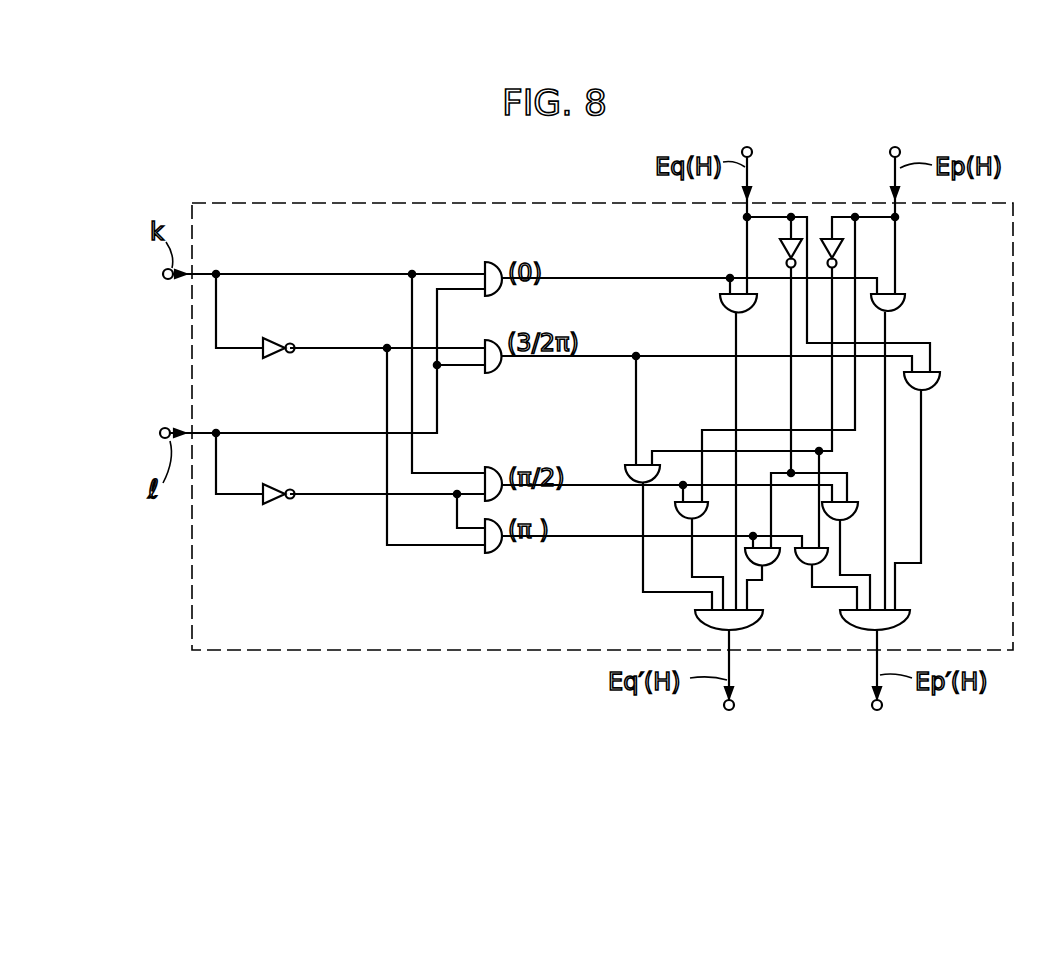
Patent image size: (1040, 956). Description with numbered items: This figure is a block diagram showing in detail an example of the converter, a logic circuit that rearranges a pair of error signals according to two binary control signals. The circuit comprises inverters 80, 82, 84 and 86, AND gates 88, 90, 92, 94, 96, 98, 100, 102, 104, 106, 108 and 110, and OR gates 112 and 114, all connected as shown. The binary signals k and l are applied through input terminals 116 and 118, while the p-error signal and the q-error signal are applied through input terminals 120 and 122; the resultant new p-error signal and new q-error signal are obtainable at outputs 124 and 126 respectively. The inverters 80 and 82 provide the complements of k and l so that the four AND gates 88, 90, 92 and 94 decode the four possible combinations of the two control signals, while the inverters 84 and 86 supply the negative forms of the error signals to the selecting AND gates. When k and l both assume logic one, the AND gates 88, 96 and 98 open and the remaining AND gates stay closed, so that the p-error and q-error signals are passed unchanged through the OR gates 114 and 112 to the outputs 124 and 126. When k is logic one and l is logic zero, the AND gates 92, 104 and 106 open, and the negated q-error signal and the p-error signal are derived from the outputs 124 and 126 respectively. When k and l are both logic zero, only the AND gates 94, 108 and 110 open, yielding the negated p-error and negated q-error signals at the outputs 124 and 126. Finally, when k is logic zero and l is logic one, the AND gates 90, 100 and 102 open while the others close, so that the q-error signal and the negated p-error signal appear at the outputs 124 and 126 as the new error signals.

The inverter 80 is at (280, 342).
The inverter 82 is at (277, 487).
The inverter 84 is at (780, 252).
The inverter 86 is at (845, 252).
The AND gate 88 is at (490, 262).
The AND gate 90 is at (496, 342).
The AND gate 92 is at (491, 467).
The AND gate 94 is at (494, 556).
The AND gate 96 is at (722, 305).
The AND gate 98 is at (906, 306).
The AND gate 100 is at (932, 389).
The AND gate 102 is at (628, 468).
The AND gate 104 is at (676, 511).
The AND gate 106 is at (858, 513).
The AND gate 108 is at (778, 566).
The AND gate 110 is at (829, 562).
The OR gate 112 is at (696, 621).
The OR gate 114 is at (910, 621).
The input terminal 116 is at (166, 280).
The input terminal 118 is at (163, 428).
The input terminal 120 is at (898, 148).
The input terminal 122 is at (745, 148).
The output 124 is at (882, 707).
The output 126 is at (724, 707).